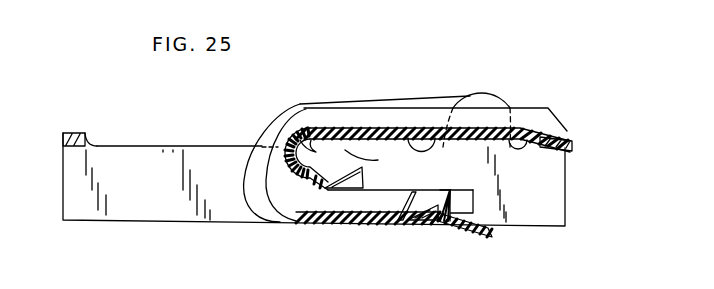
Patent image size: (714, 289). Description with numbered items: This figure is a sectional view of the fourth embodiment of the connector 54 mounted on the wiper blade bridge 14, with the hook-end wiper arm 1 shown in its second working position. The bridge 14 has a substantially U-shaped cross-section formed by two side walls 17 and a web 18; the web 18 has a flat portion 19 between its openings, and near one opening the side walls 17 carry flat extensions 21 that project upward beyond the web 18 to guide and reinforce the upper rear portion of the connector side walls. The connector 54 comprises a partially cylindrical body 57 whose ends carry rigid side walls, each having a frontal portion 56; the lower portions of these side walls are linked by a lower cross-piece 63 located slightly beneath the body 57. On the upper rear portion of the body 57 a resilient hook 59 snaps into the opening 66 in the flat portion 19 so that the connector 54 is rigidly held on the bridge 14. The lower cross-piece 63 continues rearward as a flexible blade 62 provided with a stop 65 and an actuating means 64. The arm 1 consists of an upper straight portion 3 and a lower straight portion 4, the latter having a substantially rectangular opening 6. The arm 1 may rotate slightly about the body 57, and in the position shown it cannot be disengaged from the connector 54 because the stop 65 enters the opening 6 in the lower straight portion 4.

The hook-end wiper arm 1 is at (304, 104).
The upper straight portion 3 is at (528, 110).
The lower straight portion 4 is at (350, 195).
The substantially rectangular opening 6 is at (418, 193).
The wiper blade bridge 14 is at (195, 222).
The side walls 17 is at (80, 183).
The web 18 is at (75, 133).
The flat portion 19 is at (390, 128).
The flat extensions 21 is at (488, 100).
The connector 54 is at (445, 97).
The frontal portion 56 is at (257, 202).
The partially cylindrical body 57 is at (292, 130).
The resilient hook 59 is at (353, 150).
The flexible blade 62 is at (365, 212).
The lower cross-piece 63 is at (312, 203).
The actuating means 64 is at (476, 237).
The stop 65 is at (431, 218).
The opening 66 is at (350, 147).